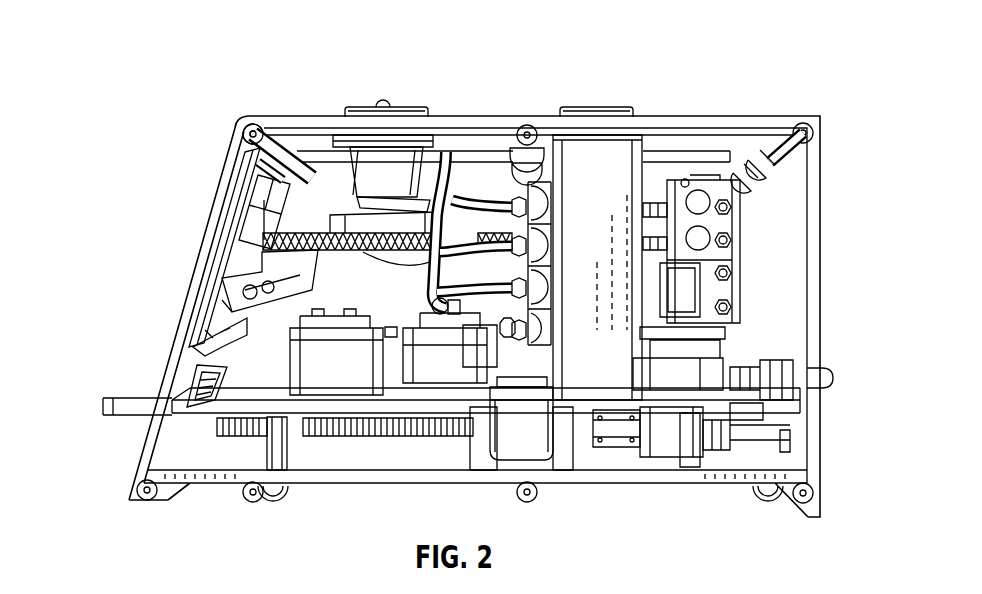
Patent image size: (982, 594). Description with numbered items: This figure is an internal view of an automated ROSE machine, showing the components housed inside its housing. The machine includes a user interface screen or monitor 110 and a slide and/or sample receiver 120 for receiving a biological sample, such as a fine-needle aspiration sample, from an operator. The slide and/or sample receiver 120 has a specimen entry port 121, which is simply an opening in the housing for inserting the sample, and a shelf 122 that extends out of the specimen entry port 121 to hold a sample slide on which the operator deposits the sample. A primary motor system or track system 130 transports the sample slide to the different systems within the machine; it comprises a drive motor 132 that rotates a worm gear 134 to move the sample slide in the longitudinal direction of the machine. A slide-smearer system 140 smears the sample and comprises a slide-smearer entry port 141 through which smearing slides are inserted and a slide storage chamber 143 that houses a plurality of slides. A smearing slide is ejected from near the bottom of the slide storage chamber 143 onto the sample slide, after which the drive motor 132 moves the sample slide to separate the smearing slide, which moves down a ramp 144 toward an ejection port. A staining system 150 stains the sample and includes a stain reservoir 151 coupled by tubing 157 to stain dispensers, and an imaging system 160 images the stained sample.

The user interface screen or monitor 110 is at (215, 220).
The slide and/or sample receiver 120 is at (130, 374).
The specimen entry port 121 is at (188, 386).
The shelf 122 is at (103, 408).
The track system 130 is at (233, 423).
The drive motor 132 is at (655, 442).
The worm gear 134 is at (255, 440).
The slide-smearer system 140 is at (619, 184).
The slide-smearer entry port 141 is at (372, 94).
The slide storage chamber 143 is at (735, 302).
The ramp 144 is at (522, 442).
The staining system 150 is at (456, 381).
The stain reservoir 151 is at (358, 163).
The tubing 157 is at (240, 145).
The imaging system 160 is at (359, 378).